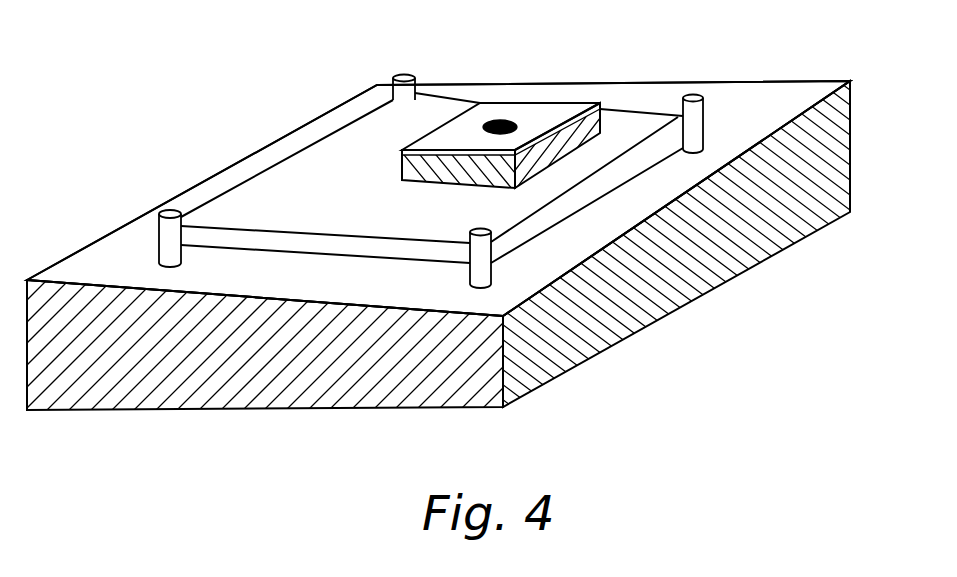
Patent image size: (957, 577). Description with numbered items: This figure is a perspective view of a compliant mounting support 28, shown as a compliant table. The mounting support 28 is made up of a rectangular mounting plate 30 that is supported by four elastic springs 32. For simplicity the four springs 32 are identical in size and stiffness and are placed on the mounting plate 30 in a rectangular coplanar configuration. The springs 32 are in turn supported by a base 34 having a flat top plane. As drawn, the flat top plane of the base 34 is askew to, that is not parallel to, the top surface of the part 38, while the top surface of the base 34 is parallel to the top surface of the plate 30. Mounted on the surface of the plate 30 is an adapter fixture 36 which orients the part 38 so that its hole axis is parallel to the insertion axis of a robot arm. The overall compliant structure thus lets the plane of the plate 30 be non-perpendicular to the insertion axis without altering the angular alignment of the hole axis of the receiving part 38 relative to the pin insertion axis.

The mounting support 28 is at (180, 398).
The mounting plate 30 is at (302, 172).
The elastic springs 32 is at (705, 120).
The base 34 is at (530, 292).
The adapter fixture 36 is at (602, 121).
The part 38 is at (537, 115).